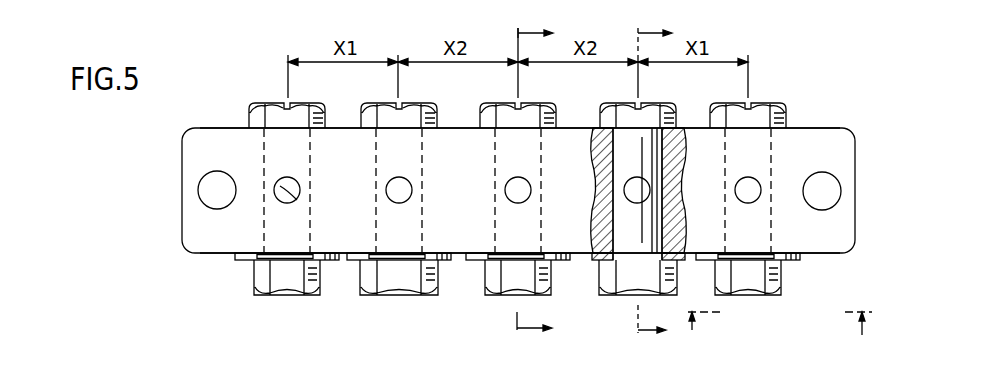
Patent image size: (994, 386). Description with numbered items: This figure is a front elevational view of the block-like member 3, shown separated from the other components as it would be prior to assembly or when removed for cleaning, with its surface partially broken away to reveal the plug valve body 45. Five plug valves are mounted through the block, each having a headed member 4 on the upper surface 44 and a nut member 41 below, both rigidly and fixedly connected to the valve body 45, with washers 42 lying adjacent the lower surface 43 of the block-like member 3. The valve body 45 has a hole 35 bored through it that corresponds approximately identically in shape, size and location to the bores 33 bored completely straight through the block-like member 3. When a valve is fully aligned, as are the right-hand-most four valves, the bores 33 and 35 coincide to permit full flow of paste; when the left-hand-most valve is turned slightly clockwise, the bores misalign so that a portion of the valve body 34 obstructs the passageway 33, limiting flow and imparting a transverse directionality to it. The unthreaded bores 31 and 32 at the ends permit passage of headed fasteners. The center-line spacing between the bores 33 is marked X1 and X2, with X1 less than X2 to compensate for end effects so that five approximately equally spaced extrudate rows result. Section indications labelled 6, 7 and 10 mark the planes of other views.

The block-like member 3 is at (447, 143).
The headed member 4 is at (608, 115).
The section line 6- 6 is at (780, 325).
The section line 7- 7 is at (655, 168).
The section line 10- 10 is at (518, 167).
The bore 31 is at (203, 180).
The bore 32 is at (830, 186).
The bore 33 is at (757, 186).
The portion of the valve body 34 is at (298, 192).
The hole 35 is at (627, 194).
The nut member 41 is at (630, 283).
The washer 42 is at (795, 258).
The lower surface 43 is at (218, 253).
The upper surface 44 is at (798, 128).
The plug valve body 45 is at (265, 155).